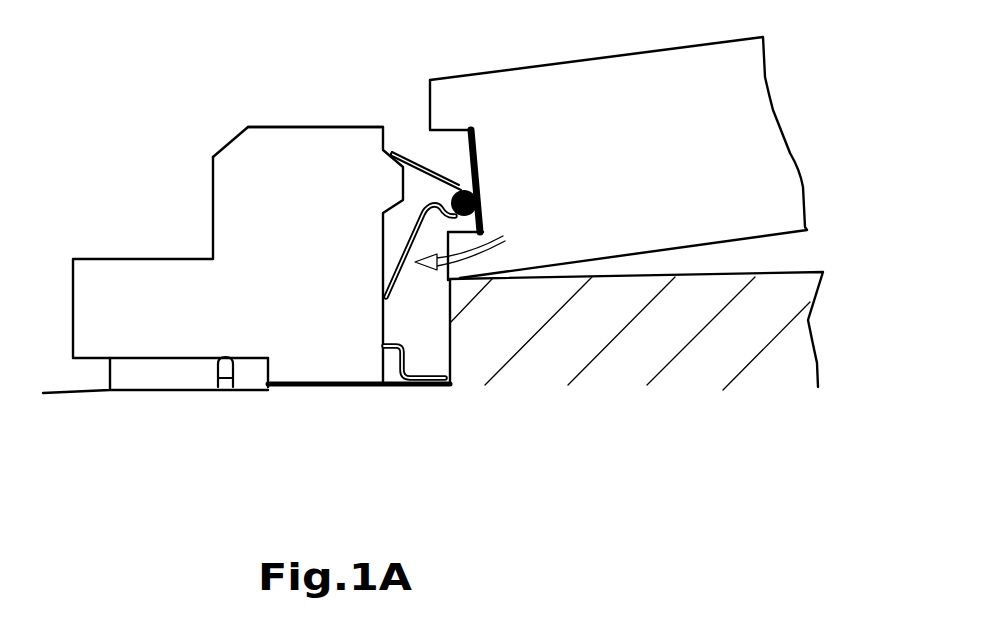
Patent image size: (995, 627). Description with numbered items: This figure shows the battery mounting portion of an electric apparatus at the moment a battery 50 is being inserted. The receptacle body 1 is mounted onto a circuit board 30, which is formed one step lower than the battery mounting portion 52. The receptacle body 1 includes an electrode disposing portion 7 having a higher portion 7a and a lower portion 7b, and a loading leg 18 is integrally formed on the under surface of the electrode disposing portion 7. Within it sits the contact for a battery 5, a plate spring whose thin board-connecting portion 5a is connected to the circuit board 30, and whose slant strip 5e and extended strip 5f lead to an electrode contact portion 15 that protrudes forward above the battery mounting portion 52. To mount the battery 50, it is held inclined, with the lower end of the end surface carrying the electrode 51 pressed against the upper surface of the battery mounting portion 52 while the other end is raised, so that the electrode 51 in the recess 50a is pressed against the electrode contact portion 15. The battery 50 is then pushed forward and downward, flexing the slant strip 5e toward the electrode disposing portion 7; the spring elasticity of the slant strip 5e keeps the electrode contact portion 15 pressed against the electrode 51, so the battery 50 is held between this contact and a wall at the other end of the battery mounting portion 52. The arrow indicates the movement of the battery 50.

The receptacle body 1 is at (185, 167).
The contact for a battery 5 is at (463, 271).
The board-connecting portion 5a is at (428, 383).
The slant strip 5e is at (403, 268).
The extended strip 5f is at (432, 167).
The electrode disposing portion 7 is at (238, 214).
The higher portion 7a is at (302, 133).
The lower portion 7b is at (140, 280).
The electrode contact portion 15 is at (477, 192).
The loading leg 18 is at (355, 352).
The circuit board 30 is at (325, 390).
The battery 50 is at (636, 140).
The recess 50a is at (480, 220).
The electrode 51 is at (475, 187).
The battery mounting portion 52 is at (782, 287).